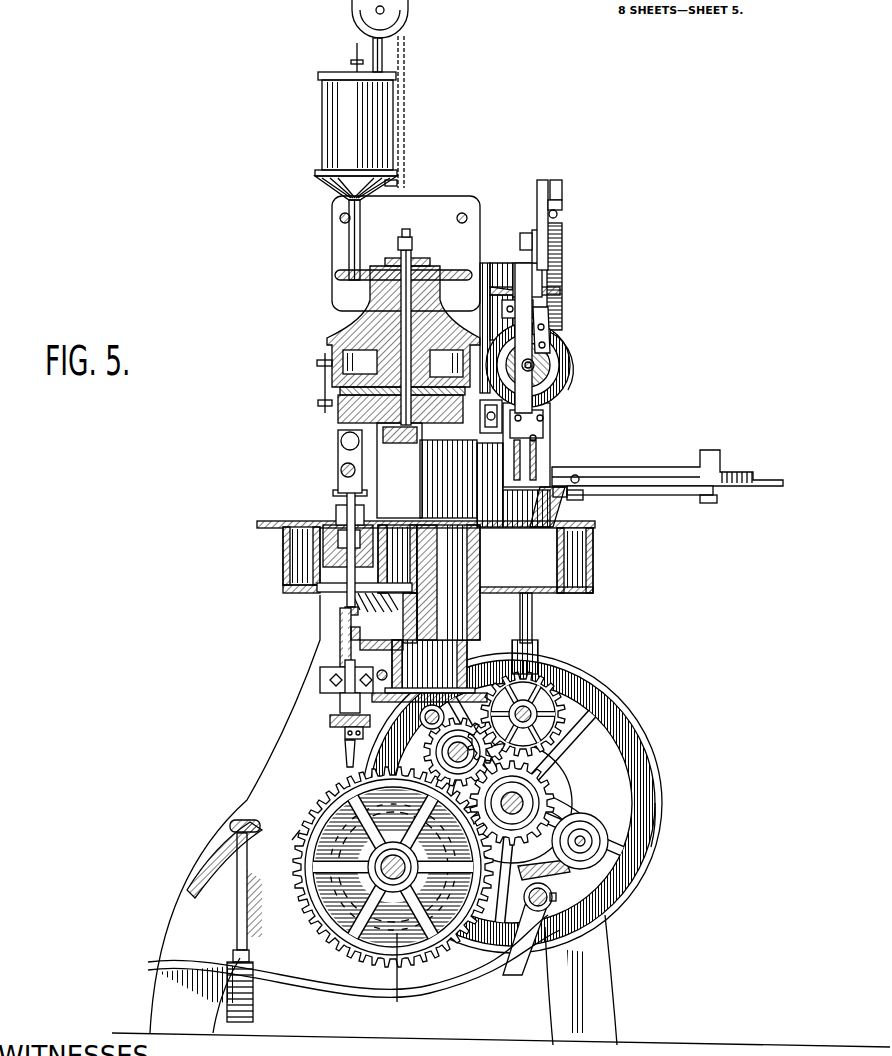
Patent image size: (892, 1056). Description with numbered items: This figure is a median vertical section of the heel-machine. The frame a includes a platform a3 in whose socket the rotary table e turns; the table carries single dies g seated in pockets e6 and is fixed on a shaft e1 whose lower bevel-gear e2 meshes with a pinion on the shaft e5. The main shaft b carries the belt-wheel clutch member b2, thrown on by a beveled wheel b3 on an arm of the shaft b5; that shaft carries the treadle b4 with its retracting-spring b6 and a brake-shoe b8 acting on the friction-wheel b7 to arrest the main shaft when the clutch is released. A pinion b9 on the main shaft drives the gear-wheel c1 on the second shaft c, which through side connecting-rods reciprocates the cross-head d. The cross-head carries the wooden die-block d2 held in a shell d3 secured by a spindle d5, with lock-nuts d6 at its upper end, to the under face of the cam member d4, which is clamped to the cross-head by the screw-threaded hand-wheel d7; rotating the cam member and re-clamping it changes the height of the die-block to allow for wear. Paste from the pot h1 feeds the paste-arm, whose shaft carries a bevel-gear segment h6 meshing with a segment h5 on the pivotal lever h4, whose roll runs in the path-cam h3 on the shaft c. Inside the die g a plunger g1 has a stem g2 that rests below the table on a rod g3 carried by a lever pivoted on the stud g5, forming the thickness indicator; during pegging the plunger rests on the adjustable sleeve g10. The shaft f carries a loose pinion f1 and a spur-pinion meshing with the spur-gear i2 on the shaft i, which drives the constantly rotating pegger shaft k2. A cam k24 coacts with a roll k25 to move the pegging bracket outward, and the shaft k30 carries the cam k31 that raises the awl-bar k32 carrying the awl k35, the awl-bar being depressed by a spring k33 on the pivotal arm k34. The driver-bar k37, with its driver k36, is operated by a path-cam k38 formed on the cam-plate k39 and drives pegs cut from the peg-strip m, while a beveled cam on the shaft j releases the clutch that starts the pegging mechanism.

The paste pot h1 is at (342, 117).
The screw-threaded hand-wheel d7 is at (338, 276).
The lock-nuts d6 is at (413, 311).
The spindle d5 is at (400, 300).
The cross-head d is at (350, 323).
The cam member d4 is at (340, 367).
The shell or case d3 is at (330, 387).
The wooden die-block d2 is at (363, 410).
The path-cam k38 is at (478, 343).
The driver-bar k37 is at (515, 277).
The pivotal arm k34 is at (537, 200).
The spring k33 is at (562, 262).
The awl-bar k32 is at (550, 313).
The shaft k30 is at (532, 367).
The cam k31 is at (547, 367).
The cam-plate k39 is at (552, 383).
The cam k24 is at (560, 405).
The roll k25 is at (482, 420).
The awl k35 is at (550, 453).
The driver k36 is at (540, 493).
The shaft k2 is at (533, 633).
The peg-strip m is at (670, 470).
The plunger or ejector g1 is at (340, 487).
The die g is at (545, 510).
The adjustable sleeve g10 is at (336, 515).
The stem g2 is at (540, 612).
The rod g3 is at (340, 617).
The stud g5 is at (383, 640).
The rotary table e is at (283, 520).
The pockets e6 is at (627, 563).
The shaft e1 is at (500, 643).
The bevel-gear e2 is at (372, 697).
The shaft e5 is at (413, 715).
The frame a is at (190, 920).
The platform a3 is at (283, 570).
The shaft j is at (320, 672).
The bevel-gear segment h6 is at (330, 717).
The bevel-gear segment h5 is at (345, 730).
The pivotal lever h4 is at (345, 745).
The path-cam h3 is at (414, 980).
The second shaft c is at (380, 870).
The gear-wheel c1 is at (303, 810).
The shaft f is at (458, 752).
The pinion f1 is at (436, 745).
The shaft i is at (527, 717).
The spur-gear i2 is at (540, 672).
The main shaft b is at (553, 780).
The clutch member b2 is at (653, 870).
The beveled wheel b3 is at (582, 840).
The treadle b4 is at (477, 973).
The shaft b5 is at (552, 905).
The retracting-spring b6 is at (253, 1000).
The friction-wheel b7 is at (560, 810).
The brake-shoe b8 is at (520, 930).
The pinion b9 is at (522, 800).